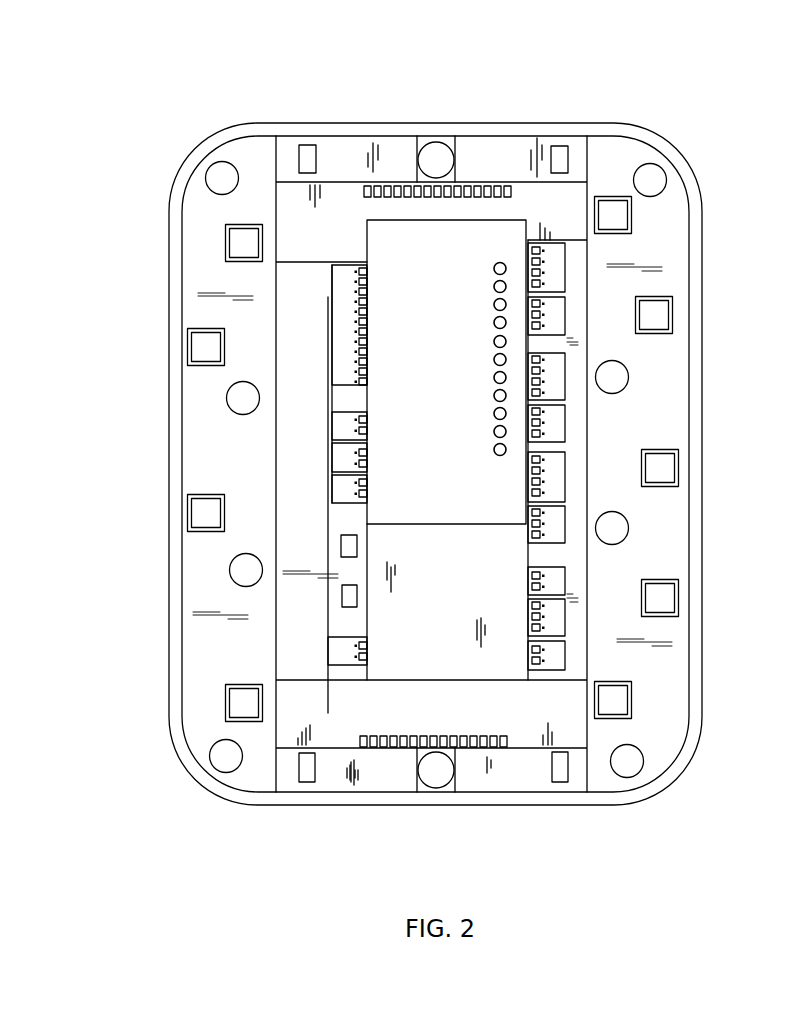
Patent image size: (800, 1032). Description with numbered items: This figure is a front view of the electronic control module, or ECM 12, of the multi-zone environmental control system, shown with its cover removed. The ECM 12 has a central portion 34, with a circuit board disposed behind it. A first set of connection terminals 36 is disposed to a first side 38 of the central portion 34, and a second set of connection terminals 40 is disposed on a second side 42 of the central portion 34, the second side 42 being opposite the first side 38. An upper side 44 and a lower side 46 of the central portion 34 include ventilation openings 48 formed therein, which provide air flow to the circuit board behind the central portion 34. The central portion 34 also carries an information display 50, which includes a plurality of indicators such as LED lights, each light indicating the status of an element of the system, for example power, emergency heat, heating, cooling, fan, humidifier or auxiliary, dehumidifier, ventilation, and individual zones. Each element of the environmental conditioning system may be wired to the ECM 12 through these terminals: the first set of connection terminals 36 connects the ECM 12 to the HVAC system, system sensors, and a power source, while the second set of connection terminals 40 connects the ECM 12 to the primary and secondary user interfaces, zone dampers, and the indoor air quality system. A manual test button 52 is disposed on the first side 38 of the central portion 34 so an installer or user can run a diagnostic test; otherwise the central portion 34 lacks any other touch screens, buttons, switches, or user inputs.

The ECM 12 is at (637, 90).
The central portion 34 is at (468, 660).
The first set of connection terminals 36 is at (318, 450).
The first side 38 is at (360, 517).
The second set of connection terminals 40 is at (568, 403).
The second side 42 is at (533, 555).
The upper side 44 is at (528, 152).
The lower side 46 is at (340, 763).
The ventilation openings 48 is at (482, 178).
The information display 50 is at (505, 250).
The manual test button 52 is at (342, 598).